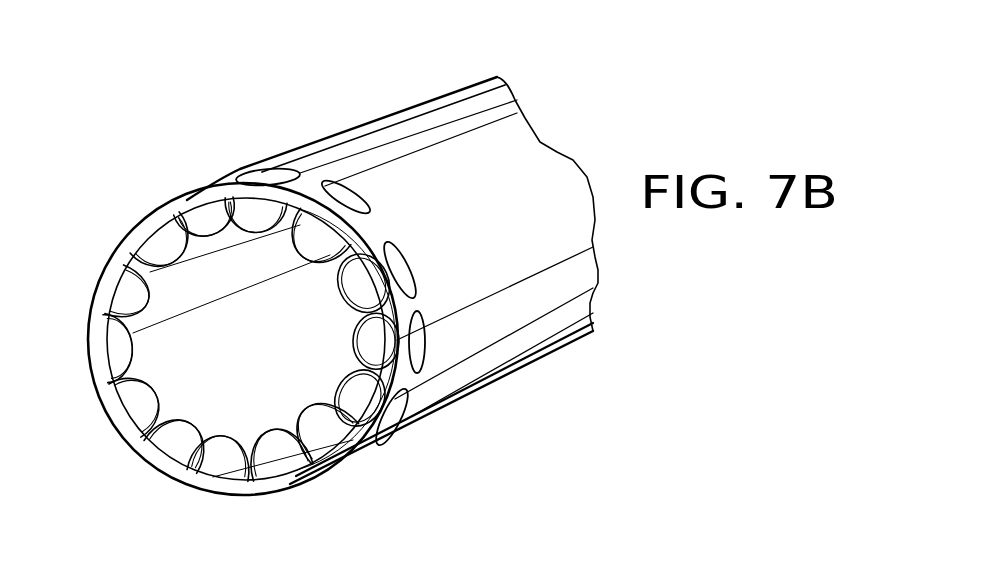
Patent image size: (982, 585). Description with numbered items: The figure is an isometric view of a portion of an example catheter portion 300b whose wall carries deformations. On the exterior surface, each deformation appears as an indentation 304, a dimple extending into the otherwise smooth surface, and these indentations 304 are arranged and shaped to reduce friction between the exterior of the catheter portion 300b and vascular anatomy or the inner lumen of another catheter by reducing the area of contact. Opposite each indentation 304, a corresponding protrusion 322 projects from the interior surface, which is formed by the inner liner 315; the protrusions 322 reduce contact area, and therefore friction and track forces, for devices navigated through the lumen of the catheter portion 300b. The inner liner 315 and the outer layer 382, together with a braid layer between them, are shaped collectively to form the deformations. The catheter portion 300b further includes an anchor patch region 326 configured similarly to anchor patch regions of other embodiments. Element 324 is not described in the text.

The catheter portion 300b is at (310, 138).
The anchor patch region 326 is at (521, 101).
The outer layer 382 is at (183, 197).
The inner liner 315 is at (187, 282).
The protrusion 322 is at (264, 453).
The indentation 304 is at (352, 199).
The outer tab 324 is at (419, 345).